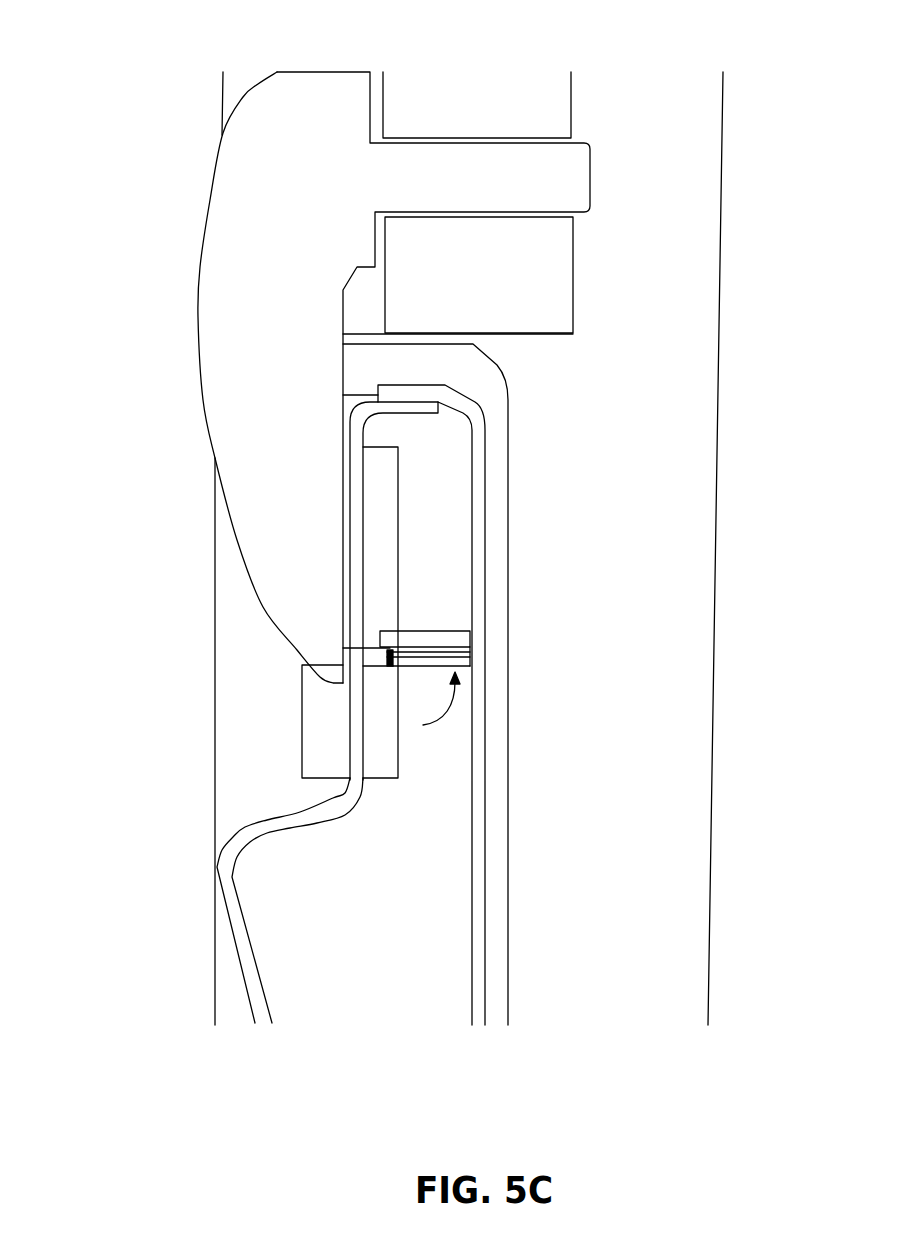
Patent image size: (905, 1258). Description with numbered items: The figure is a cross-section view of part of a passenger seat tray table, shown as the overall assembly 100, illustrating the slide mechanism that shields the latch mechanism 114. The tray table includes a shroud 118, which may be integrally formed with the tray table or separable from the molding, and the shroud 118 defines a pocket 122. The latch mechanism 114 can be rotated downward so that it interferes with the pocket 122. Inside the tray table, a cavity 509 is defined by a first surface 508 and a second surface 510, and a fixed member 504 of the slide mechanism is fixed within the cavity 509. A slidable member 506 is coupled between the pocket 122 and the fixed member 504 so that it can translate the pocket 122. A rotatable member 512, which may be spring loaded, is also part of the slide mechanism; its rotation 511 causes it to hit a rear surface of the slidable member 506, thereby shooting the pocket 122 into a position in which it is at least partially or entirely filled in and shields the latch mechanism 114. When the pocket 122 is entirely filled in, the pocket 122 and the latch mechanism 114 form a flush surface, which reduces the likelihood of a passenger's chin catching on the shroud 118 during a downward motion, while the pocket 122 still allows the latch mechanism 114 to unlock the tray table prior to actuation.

The lighting device 100 is at (93, 34).
The latch mechanism 114 is at (197, 345).
The shroud 118 is at (573, 272).
The pocket 122 is at (300, 716).
The fixed member 504 is at (415, 628).
The slidable member 506 is at (368, 668).
The first surface 508 is at (245, 997).
The cavity 509 is at (407, 941).
The second surface 510 is at (485, 993).
The rotation 511 is at (460, 702).
The rotatable member 512 is at (470, 660).